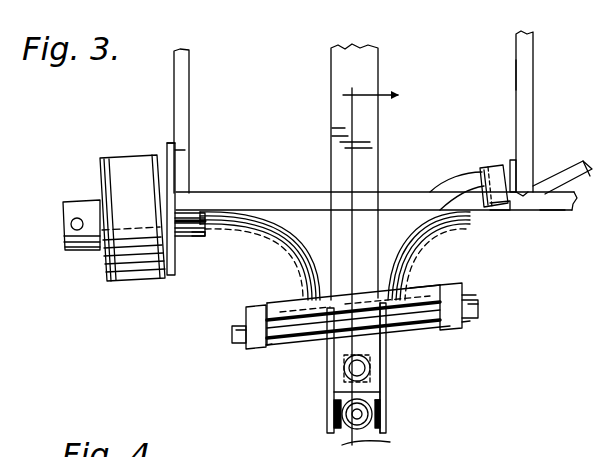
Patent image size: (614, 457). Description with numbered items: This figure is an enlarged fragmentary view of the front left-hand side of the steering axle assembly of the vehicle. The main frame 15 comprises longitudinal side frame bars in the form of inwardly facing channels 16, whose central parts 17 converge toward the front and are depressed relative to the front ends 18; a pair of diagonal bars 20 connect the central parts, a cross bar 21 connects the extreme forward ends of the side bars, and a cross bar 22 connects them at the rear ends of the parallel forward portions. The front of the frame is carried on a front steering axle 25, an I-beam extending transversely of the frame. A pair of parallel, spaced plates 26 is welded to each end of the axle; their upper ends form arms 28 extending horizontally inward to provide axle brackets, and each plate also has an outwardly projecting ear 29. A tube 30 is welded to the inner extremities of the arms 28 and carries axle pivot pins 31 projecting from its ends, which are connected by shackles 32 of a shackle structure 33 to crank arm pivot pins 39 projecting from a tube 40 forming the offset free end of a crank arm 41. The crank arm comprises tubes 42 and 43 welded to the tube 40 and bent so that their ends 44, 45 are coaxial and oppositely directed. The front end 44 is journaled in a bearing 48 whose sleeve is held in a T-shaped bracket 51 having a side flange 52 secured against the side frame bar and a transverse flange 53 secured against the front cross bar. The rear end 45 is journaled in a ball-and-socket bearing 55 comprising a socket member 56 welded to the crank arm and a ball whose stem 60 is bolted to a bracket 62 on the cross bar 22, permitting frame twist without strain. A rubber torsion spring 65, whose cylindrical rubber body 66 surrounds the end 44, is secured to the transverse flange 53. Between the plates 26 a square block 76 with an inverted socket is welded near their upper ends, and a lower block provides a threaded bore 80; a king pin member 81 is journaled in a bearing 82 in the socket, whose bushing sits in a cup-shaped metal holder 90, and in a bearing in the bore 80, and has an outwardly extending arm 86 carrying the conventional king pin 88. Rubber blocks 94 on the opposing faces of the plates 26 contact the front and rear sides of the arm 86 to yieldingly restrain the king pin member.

The main frame 15 is at (515, 42).
The side frame bars 16 is at (553, 212).
The central parts 17 is at (568, 208).
The front ends 18 is at (297, 190).
The diagonal bars 20 is at (572, 165).
The cross bar 21 is at (186, 68).
The cross bar 22 is at (517, 73).
The front steering axle 25 is at (368, 48).
The plates 26 is at (326, 398).
The arms 28 is at (326, 306).
The ear 29 is at (388, 443).
The tube 30 is at (420, 287).
The axle pivot pins 31 is at (262, 307).
The shackles 32 is at (255, 346).
The shackle structure 33 is at (473, 298).
The crank arm pivot pins 39 is at (268, 347).
The tube 40 is at (442, 326).
The crank arm 41 is at (440, 184).
The front tubular arm 42 is at (276, 221).
The rear tubular arm 43 is at (406, 222).
The front end 44 is at (225, 210).
The rear end 45 is at (460, 183).
The bearing 48 is at (200, 238).
The bracket 51 is at (166, 141).
The side flange 52 is at (190, 214).
The transverse flange 53 is at (183, 147).
The ball-and-socket bearing 55 is at (493, 163).
The socket member 56 is at (497, 191).
The stem 60 is at (522, 193).
The bracket 62 is at (518, 163).
The rubber torsion spring 65 is at (114, 202).
The rubber body 66 is at (133, 189).
The square block 76 is at (386, 381).
The threaded bore 80 is at (350, 428).
The king pin member 81 is at (385, 409).
The bearing 82 is at (343, 367).
The arm 86 is at (342, 406).
The king pin 88 is at (357, 438).
The cup-shaped metal holder 90 is at (352, 371).
The rubber blocks 94 is at (331, 426).